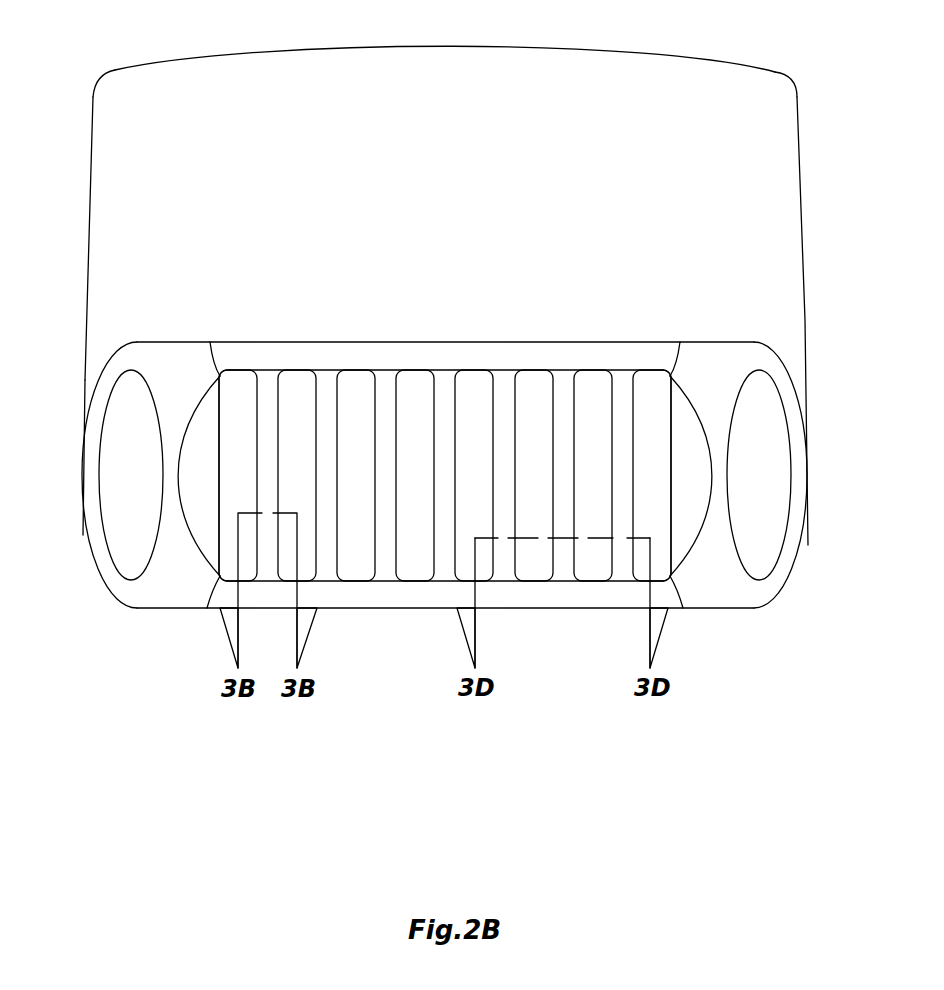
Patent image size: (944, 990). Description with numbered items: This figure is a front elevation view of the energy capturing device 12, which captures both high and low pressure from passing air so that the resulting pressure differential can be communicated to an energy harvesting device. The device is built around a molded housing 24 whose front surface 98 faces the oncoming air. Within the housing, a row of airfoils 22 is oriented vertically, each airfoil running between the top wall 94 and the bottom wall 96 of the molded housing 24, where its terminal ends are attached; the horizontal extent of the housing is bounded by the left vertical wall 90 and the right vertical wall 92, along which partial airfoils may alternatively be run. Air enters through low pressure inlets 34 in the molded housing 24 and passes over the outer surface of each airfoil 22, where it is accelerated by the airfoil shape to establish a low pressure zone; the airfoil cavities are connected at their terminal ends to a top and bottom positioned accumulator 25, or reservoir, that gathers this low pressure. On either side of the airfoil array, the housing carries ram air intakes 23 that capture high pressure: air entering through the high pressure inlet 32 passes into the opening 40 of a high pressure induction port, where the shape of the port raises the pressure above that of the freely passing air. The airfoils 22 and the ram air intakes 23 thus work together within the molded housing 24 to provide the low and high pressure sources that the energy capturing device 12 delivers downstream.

The energy capturing device 12 is at (153, 50).
The top wall 94 is at (697, 62).
The molded housing 24 is at (92, 197).
The front surface 98 is at (446, 231).
The accumulator 25 is at (640, 350).
The airfoil 22 is at (297, 383).
The low pressure inlet 34 is at (267, 398).
The ram air intake 23 is at (105, 410).
The left vertical wall 90 is at (83, 486).
The right vertical wall 92 is at (808, 475).
The high pressure inlet 32 is at (130, 506).
The opening 40 is at (105, 542).
The bottom wall 96 is at (177, 608).